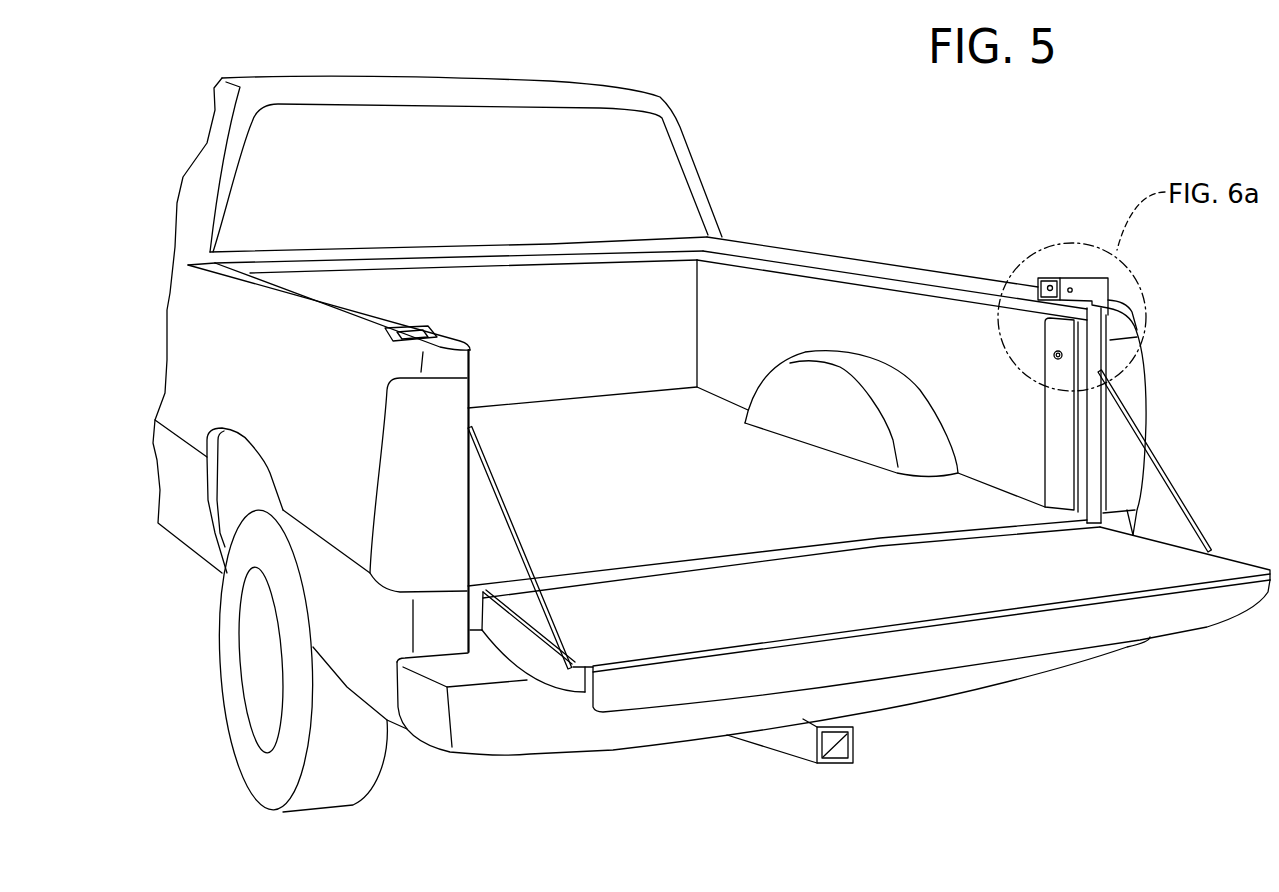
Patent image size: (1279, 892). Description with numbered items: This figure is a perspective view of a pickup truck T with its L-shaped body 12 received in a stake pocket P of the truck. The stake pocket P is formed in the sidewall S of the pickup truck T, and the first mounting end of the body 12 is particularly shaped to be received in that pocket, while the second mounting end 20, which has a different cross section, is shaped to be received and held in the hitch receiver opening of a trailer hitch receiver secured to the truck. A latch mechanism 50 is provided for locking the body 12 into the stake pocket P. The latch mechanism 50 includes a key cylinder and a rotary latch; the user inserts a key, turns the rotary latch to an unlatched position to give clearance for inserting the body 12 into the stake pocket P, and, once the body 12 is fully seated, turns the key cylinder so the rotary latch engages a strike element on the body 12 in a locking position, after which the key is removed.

The pickup truck T is at (190, 317).
The sidewall S is at (834, 262).
The stake pocket P is at (1112, 318).
The latch mechanism 50 is at (1057, 369).
The second mounting end 20 is at (1047, 278).
The body 12 is at (1103, 278).